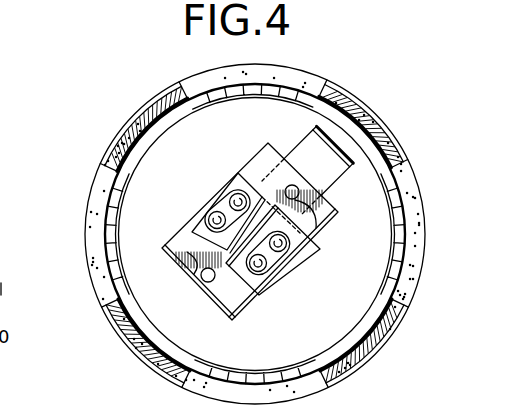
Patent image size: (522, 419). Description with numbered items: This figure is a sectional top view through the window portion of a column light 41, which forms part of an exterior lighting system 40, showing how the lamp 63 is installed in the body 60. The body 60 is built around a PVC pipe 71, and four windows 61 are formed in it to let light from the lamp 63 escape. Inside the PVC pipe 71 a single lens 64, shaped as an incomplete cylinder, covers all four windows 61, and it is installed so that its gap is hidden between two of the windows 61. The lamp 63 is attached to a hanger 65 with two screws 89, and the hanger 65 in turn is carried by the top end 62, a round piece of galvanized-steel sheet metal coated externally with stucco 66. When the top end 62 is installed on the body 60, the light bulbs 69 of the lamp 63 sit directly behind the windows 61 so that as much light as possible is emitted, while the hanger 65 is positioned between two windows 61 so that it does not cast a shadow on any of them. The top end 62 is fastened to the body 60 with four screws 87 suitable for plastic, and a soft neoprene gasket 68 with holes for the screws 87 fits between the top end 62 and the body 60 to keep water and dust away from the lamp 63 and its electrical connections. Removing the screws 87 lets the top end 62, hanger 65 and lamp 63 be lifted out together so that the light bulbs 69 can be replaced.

The exterior lighting system 40 is at (88, 339).
The column light 41 is at (76, 310).
The body 60 is at (350, 362).
The windows 61 is at (296, 85).
The top end 62 is at (12, 76).
The lamp 63 is at (296, 255).
The lens 64 is at (224, 96).
The hanger 65 is at (355, 173).
The stucco 66 is at (413, 308).
The gasket 68 is at (0, 109).
The light bulbs 69 is at (264, 268).
The PVC pipe 71 is at (135, 125).
The screws 87 is at (427, 415).
The screws 89 is at (297, 196).